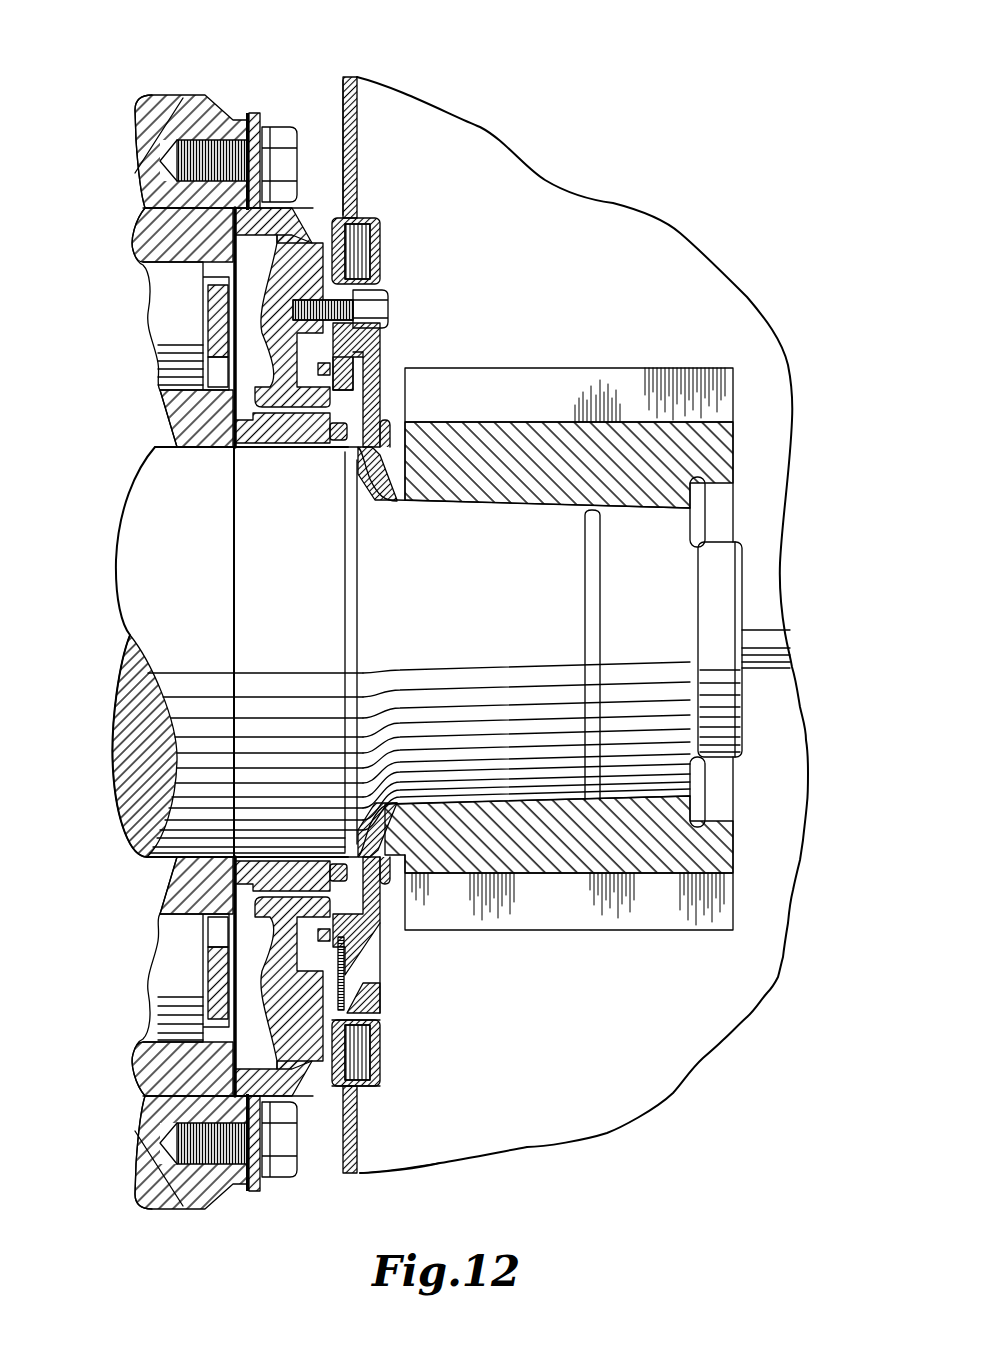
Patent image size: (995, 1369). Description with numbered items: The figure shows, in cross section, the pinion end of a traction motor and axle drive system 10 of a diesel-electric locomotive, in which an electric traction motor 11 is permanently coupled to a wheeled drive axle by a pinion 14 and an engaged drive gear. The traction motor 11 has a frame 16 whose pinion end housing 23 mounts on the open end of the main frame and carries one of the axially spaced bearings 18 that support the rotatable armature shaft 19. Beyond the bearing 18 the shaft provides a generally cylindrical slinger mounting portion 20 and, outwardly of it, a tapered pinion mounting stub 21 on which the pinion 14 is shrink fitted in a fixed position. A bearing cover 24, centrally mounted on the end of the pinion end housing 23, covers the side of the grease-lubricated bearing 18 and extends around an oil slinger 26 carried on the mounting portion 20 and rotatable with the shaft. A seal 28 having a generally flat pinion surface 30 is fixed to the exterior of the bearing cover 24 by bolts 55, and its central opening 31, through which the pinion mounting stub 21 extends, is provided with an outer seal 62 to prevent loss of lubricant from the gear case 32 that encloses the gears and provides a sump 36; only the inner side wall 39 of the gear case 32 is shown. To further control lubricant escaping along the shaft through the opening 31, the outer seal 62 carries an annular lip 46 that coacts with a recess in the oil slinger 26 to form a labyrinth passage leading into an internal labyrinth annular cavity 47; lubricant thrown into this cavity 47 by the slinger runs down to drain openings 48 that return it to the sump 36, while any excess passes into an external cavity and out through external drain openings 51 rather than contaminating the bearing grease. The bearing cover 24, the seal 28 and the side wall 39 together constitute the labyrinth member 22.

The traction motor and axle drive system 10 is at (633, 243).
The electric traction motor 11 is at (130, 133).
The pinion 14 is at (708, 450).
The frame 16 is at (140, 152).
The bearings 18 is at (160, 290).
The armature shaft 19 is at (137, 540).
The slinger mounting portion 20 is at (301, 604).
The pinion mounting stub 21 is at (700, 588).
The labyrinth member 22 is at (278, 104).
The pinion end housing 23 is at (224, 115).
The bearing cover 24 is at (300, 218).
The oil slinger 26 is at (260, 447).
The seal 28 is at (368, 395).
The pinion surface 30 is at (380, 393).
The central opening 31 is at (400, 828).
The gear case 32 is at (331, 82).
The sump 36 is at (383, 1130).
The inner side wall 39 is at (342, 147).
The annular lip 46 is at (333, 458).
The internal labyrinth annular cavity 47 is at (350, 352).
The drain openings 48 is at (372, 975).
The external drain openings 51 is at (357, 998).
The bolts 55 is at (378, 307).
The outer seal 62 is at (392, 447).